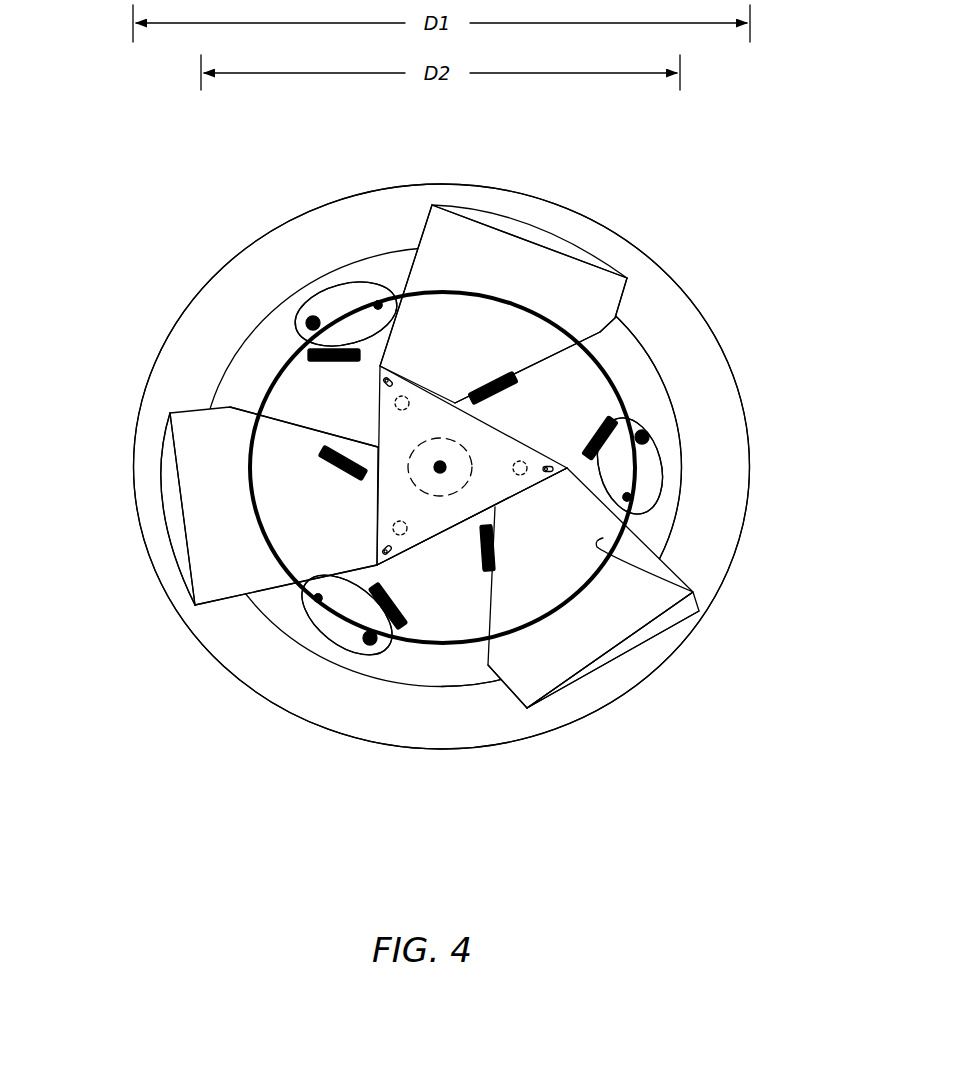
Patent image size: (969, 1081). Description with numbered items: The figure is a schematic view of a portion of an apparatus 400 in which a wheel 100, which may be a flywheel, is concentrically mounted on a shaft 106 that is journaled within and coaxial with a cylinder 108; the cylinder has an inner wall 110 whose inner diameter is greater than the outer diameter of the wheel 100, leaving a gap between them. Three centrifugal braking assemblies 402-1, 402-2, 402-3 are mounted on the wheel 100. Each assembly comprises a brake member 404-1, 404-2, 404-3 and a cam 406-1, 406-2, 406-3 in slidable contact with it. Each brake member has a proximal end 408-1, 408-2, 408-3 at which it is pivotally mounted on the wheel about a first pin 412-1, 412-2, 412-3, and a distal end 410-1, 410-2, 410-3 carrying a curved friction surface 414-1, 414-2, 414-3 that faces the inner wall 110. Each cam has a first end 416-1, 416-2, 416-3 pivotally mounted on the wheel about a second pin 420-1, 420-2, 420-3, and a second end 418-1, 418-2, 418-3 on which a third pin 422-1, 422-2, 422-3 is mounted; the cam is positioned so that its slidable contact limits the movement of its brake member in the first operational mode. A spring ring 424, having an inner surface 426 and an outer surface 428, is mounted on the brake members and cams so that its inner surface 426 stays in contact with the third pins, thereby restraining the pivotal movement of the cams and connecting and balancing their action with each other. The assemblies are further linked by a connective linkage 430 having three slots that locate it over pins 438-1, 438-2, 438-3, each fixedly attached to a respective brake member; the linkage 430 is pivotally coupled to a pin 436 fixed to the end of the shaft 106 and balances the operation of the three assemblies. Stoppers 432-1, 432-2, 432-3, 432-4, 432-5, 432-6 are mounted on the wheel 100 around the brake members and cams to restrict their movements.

The wheel 100 is at (655, 345).
The shaft 106 is at (378, 480).
The cylinder 108 is at (650, 275).
The inner wall 110 is at (655, 281).
The apparatus 400 is at (762, 118).
The centrifugal braking assembly 402-1 is at (498, 200).
The centrifugal braking assembly 402-2 is at (667, 657).
The centrifugal braking assembly 402-3 is at (153, 550).
The brake member 404-1 is at (417, 230).
The brake member 404-2 is at (694, 594).
The brake member 404-3 is at (224, 605).
The cam 406-1 is at (317, 282).
The cam 406-2 is at (679, 457).
The cam 406-3 is at (327, 658).
The proximal end 408-1 is at (368, 432).
The proximal end 408-2 is at (545, 359).
The proximal end 408-3 is at (449, 540).
The distal end 410-1 is at (520, 240).
The distal end 410-2 is at (617, 643).
The distal end 410-3 is at (187, 517).
The first pin 412-1 is at (405, 398).
The first pin 412-2 is at (513, 373).
The first pin 412-3 is at (403, 535).
The curved friction surface 414-1 is at (587, 248).
The curved friction surface 414-2 is at (572, 696).
The curved friction surface 414-3 is at (160, 454).
The first end 416-1 is at (298, 310).
The first end 416-2 is at (663, 433).
The first end 416-3 is at (356, 660).
The second end 418-1 is at (383, 280).
The second end 418-2 is at (675, 568).
The second end 418-3 is at (350, 568).
The second pin 420-1 is at (308, 320).
The second pin 420-2 is at (613, 418).
The second pin 420-3 is at (369, 645).
The third pin 422-1 is at (378, 302).
The third pin 422-2 is at (647, 515).
The third pin 422-3 is at (318, 602).
The spring ring 424 is at (290, 608).
The inner surface 426 is at (665, 617).
The outer surface 428 is at (640, 680).
The connective linkage 430 is at (262, 556).
The stopper 432-1 is at (310, 354).
The stopper 432-2 is at (503, 378).
The stopper 432-3 is at (510, 422).
The stopper 432-4 is at (490, 572).
The stopper 432-5 is at (401, 628).
The stopper 432-6 is at (322, 452).
The pin 436 is at (433, 470).
The pin 438-1 is at (384, 380).
The pin 438-2 is at (556, 470).
The pin 438-3 is at (392, 556).